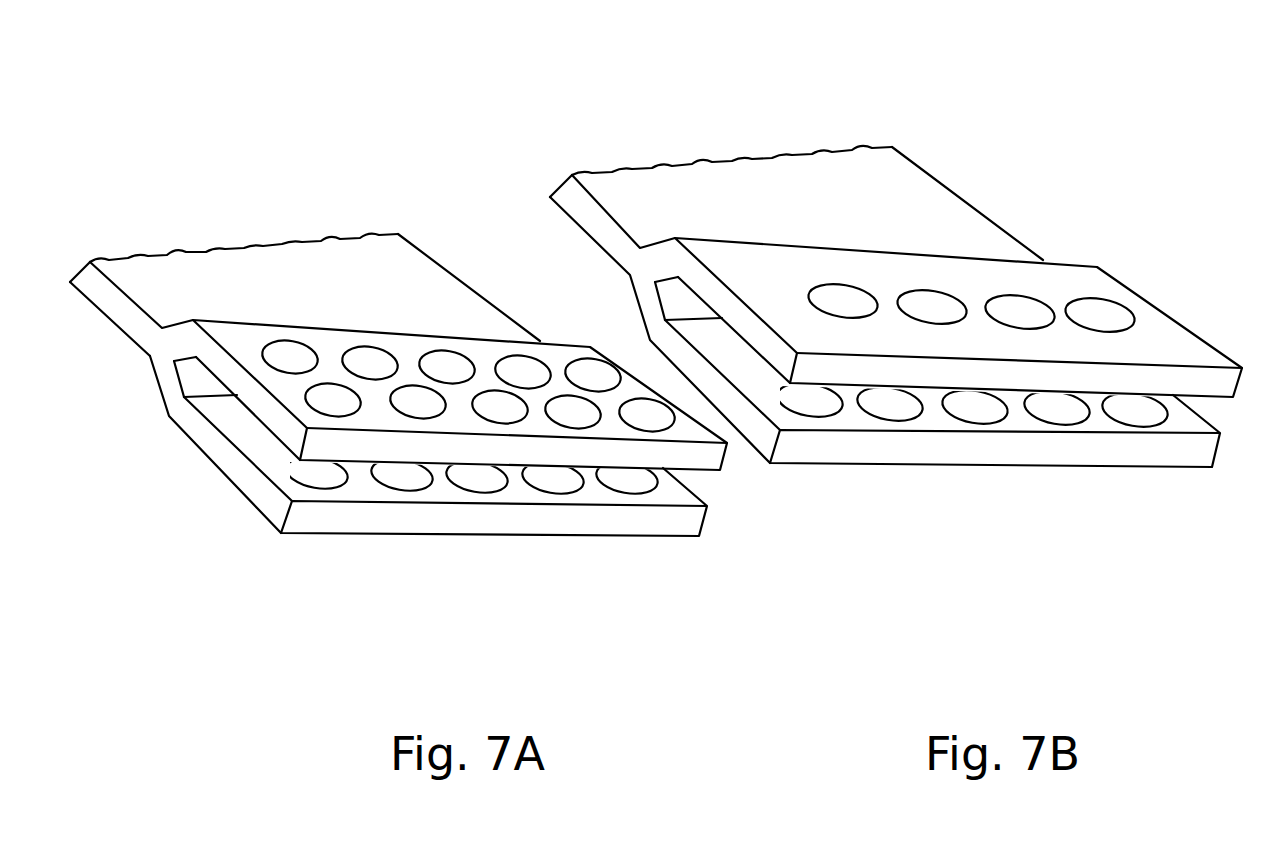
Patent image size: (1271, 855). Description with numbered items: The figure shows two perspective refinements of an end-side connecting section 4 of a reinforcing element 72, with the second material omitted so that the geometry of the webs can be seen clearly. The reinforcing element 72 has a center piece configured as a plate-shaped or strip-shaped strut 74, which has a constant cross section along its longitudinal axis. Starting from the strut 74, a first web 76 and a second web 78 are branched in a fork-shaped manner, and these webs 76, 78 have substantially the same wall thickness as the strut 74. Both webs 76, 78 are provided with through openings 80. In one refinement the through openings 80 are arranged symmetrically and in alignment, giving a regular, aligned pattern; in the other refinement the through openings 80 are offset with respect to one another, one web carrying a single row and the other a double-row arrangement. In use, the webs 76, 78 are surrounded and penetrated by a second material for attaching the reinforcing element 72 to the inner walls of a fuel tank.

In FIG. 7A, the end-side connecting section 4 is at (393, 399).
In FIG. 7B, the end-side connecting section 4 is at (898, 326).
In FIG. 7A, the reinforcing element 72 is at (302, 319).
In FIG. 7B, the reinforcing element 72 is at (1040, 152).
In FIG. 7A, the plate-shaped or strip-shaped strut 74 is at (150, 304).
In FIG. 7A, the first web 76 is at (280, 422).
In FIG. 7B, the first web 76 is at (1183, 341).
In FIG. 7A, the second web 78 is at (317, 517).
In FIG. 7B, the second web 78 is at (937, 372).
In FIG. 7A, the through openings 80 is at (627, 478).
In FIG. 7B, the through openings 80 is at (1103, 313).